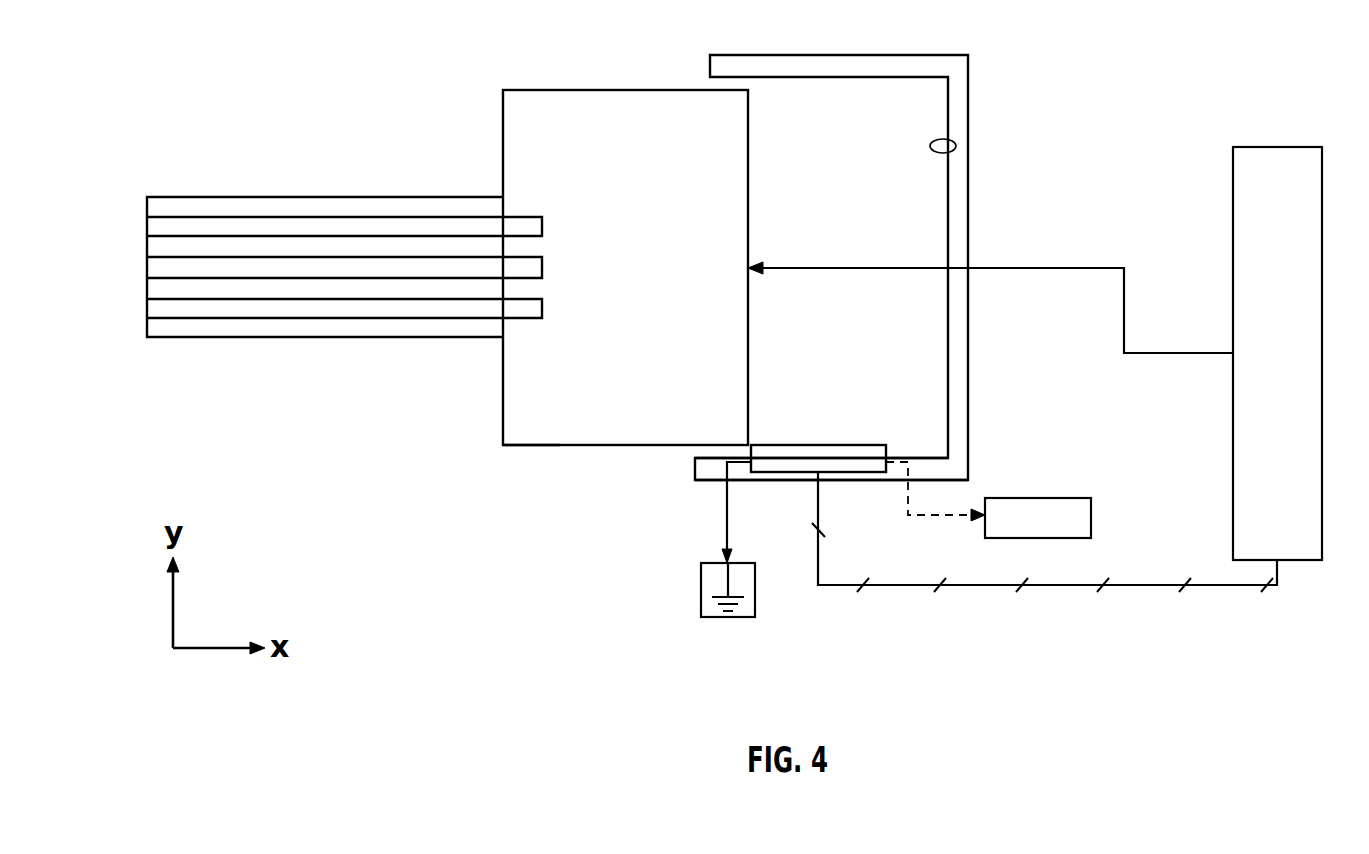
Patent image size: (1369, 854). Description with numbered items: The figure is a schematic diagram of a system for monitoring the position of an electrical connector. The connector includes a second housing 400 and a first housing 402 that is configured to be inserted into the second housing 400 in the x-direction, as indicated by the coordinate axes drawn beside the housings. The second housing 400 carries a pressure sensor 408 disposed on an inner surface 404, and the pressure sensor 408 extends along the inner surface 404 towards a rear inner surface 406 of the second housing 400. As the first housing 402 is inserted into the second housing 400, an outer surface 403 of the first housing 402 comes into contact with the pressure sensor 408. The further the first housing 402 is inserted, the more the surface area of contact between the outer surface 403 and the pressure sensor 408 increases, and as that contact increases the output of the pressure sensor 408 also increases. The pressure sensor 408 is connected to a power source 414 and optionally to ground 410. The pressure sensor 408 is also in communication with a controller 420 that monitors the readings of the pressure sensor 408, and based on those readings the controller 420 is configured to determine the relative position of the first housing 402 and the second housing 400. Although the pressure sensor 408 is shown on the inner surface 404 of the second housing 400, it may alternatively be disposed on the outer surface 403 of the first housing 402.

The second housing 400 is at (970, 76).
The first housing 402 is at (525, 88).
The outer surface 403 is at (522, 447).
The inner surface 404 is at (918, 458).
The rear inner surface 406 is at (950, 150).
The pressure sensor 408 is at (800, 443).
The ground 410 is at (709, 587).
The power source 414 is at (1060, 530).
The controller 420 is at (1300, 367).